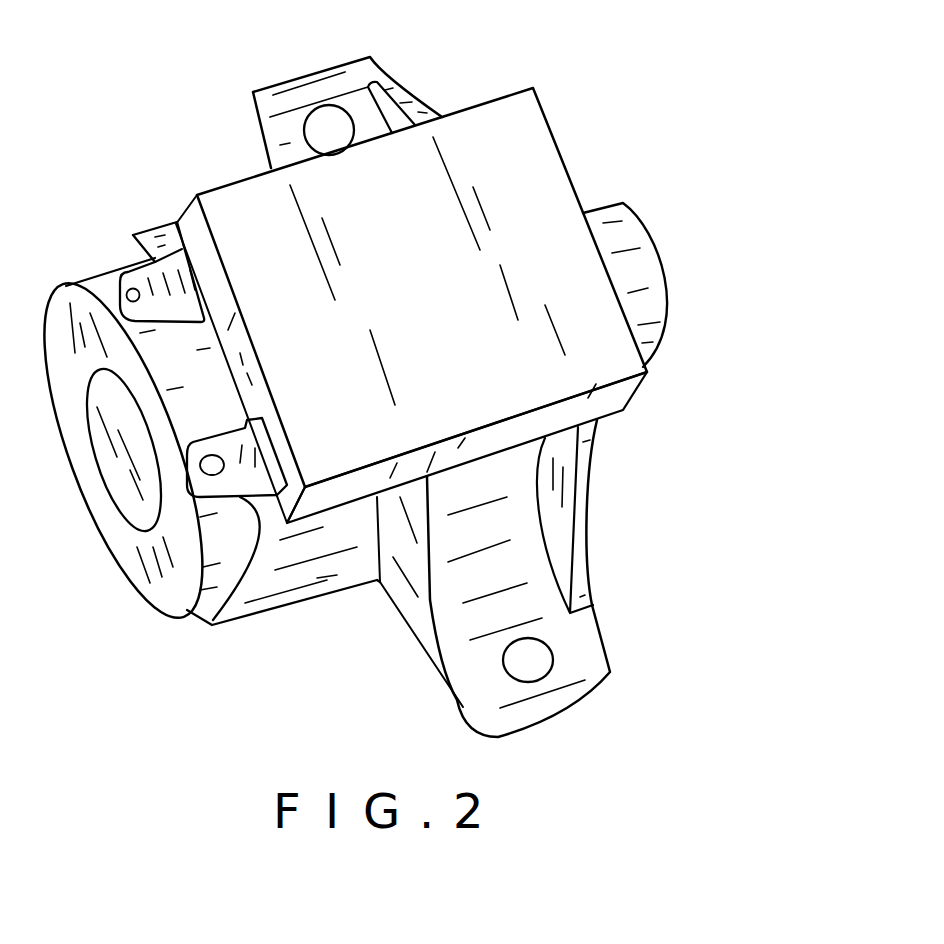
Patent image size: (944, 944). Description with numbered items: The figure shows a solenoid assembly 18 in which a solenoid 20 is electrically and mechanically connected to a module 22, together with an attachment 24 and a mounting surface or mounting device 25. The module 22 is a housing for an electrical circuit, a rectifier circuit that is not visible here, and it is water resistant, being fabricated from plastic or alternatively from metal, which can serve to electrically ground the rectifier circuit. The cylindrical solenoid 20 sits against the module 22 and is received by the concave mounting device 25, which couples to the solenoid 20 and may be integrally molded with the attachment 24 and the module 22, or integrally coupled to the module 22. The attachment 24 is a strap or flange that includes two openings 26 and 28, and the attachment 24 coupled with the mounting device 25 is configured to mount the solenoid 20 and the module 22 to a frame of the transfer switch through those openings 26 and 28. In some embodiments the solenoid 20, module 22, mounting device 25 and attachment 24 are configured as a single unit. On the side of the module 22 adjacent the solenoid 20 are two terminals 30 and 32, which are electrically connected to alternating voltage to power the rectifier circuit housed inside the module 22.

The solenoid assembly 18 is at (675, 218).
The solenoid 20 is at (133, 570).
The module 22 is at (507, 132).
The attachment 24 is at (382, 64).
The mounting device 25 is at (325, 580).
The opening 26 is at (303, 127).
The opening 28 is at (503, 668).
The terminal 30 is at (131, 287).
The terminal 32 is at (260, 437).